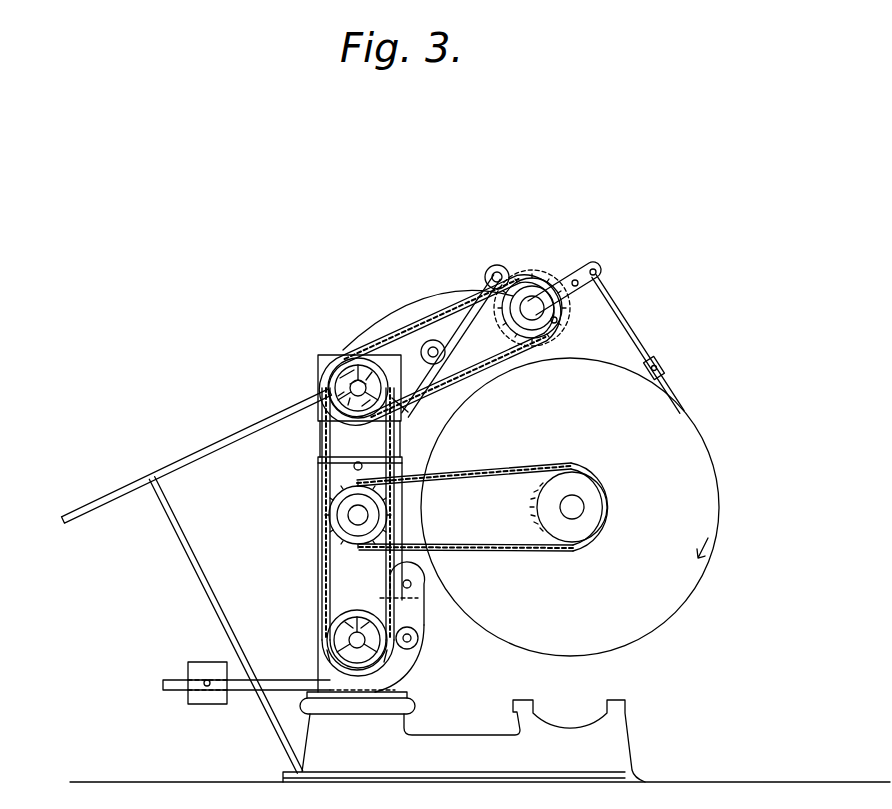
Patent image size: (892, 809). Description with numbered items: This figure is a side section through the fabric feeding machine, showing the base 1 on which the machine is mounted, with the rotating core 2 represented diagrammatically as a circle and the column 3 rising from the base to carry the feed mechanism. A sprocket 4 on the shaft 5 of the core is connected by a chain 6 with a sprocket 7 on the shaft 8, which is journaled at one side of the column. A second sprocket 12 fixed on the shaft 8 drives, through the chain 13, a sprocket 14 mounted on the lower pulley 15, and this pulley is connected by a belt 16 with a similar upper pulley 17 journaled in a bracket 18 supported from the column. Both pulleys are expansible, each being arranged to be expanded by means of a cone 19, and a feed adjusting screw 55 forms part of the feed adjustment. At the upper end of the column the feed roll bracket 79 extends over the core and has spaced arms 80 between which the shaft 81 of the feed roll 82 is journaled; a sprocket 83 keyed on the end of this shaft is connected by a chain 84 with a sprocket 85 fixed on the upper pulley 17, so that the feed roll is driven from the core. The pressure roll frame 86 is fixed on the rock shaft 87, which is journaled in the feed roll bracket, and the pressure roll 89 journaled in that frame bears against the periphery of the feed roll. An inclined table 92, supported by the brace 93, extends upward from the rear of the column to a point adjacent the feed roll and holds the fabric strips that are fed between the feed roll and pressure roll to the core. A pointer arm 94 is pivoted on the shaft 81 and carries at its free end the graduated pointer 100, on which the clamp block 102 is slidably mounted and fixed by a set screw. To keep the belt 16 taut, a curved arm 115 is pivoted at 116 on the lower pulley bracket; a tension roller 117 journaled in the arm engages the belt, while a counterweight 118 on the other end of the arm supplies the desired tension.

The base 1 is at (453, 733).
The core 2 is at (718, 512).
The column 3 is at (318, 484).
The sprocket 4 is at (585, 484).
The shaft of the core 5 is at (577, 522).
The chain 6 is at (487, 480).
The sprocket 7 is at (335, 512).
The shaft 8 is at (352, 515).
The sprocket 12 is at (335, 540).
The chain 13 is at (322, 575).
The sprocket 14 is at (322, 604).
The pulley 15 is at (322, 645).
The belt 16 is at (318, 468).
The pulley 17 is at (318, 380).
The bracket 18 is at (320, 430).
The cone 19 is at (349, 357).
The feed adjusting screw 55 is at (358, 462).
The feed roll bracket 79 is at (366, 347).
The spaced arms 80 is at (418, 307).
The shaft of the feed roll 81 is at (534, 300).
The feed roll 82 is at (562, 332).
The sprocket 83 is at (557, 320).
The chain 84 is at (500, 368).
The sprocket 85 is at (405, 405).
The pressure roll frame 86 is at (484, 297).
The rock shaft 87 is at (425, 343).
The pressure roll 89 is at (499, 266).
The inclined table 92 is at (222, 433).
The brace 93 is at (193, 562).
The pointer arm 94 is at (582, 276).
The pointer 100 is at (640, 345).
The clamp block 102 is at (663, 370).
The curved arm 115 is at (413, 670).
The pivot 116 is at (418, 640).
The tension roller 117 is at (425, 605).
The counterweight 118 is at (207, 705).